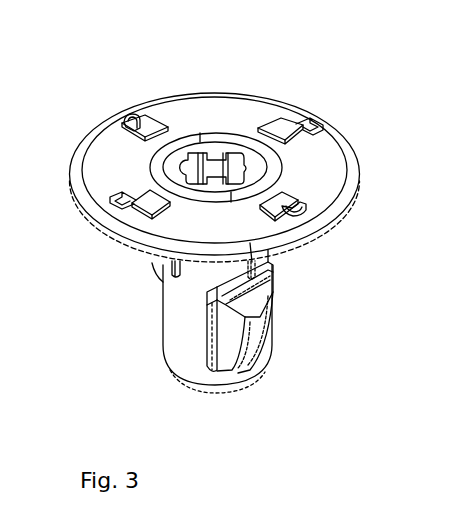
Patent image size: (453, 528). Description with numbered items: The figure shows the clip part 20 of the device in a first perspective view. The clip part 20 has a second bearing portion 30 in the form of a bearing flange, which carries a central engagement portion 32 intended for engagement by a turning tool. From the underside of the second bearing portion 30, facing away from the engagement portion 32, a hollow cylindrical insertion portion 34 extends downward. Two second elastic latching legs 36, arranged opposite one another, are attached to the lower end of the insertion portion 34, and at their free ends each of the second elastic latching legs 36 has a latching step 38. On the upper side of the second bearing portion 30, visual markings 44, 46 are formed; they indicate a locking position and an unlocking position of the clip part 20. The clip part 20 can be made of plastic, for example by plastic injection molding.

The clip part 20 is at (101, 97).
The second bearing portion 30 is at (325, 149).
The central engagement portion 32 is at (215, 168).
The insertion portion 34 is at (170, 328).
The second elastic latching legs 36 is at (257, 330).
The latching step 38 is at (260, 298).
The visual marking 44 is at (280, 127).
The visual marking 46 is at (147, 133).